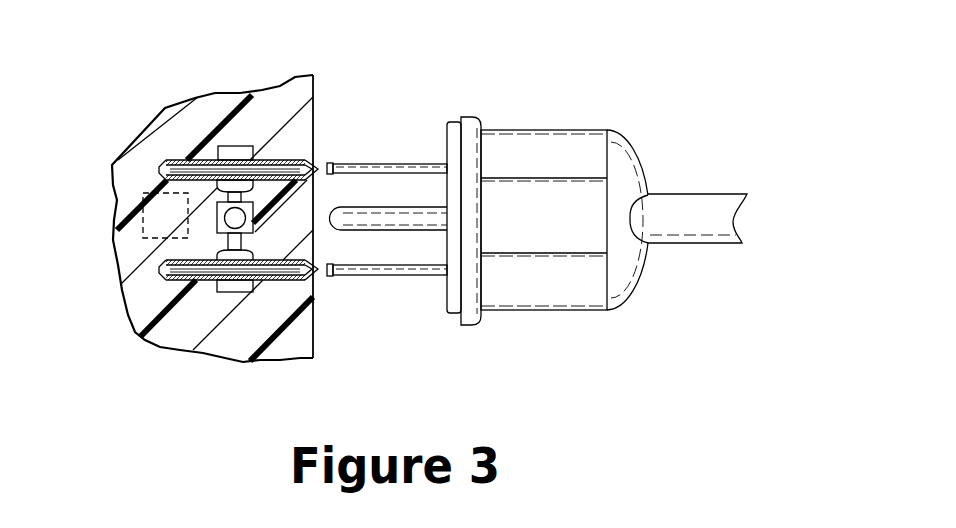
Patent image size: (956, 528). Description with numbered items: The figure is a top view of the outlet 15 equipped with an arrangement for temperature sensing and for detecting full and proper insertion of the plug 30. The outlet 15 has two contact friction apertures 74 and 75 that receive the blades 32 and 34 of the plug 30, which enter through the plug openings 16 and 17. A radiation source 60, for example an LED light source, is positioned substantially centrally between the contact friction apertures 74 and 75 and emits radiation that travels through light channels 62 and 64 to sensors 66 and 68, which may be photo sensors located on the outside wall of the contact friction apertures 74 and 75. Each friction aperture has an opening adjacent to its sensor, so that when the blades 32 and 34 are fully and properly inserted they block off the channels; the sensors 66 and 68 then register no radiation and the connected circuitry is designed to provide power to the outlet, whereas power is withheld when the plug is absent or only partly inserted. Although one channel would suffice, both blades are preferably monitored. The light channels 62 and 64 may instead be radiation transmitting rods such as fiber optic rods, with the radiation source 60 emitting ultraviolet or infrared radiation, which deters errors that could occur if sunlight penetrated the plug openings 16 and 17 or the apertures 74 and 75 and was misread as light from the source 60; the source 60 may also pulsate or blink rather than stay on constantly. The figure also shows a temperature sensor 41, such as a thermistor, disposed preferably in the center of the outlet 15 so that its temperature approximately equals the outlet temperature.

The outlet 15 is at (291, 66).
The plug opening 16 is at (314, 168).
The plug opening 17 is at (310, 274).
The plug 30 is at (590, 96).
The blade 32 is at (406, 277).
The blade 34 is at (400, 163).
The temperature sensor 41 is at (155, 213).
The radiation source 60 is at (227, 230).
The light channel 62 is at (217, 190).
The light channel 64 is at (225, 283).
The sensor 66 is at (238, 147).
The sensor 68 is at (238, 292).
The contact friction aperture 74 is at (167, 160).
The contact friction aperture 75 is at (178, 281).